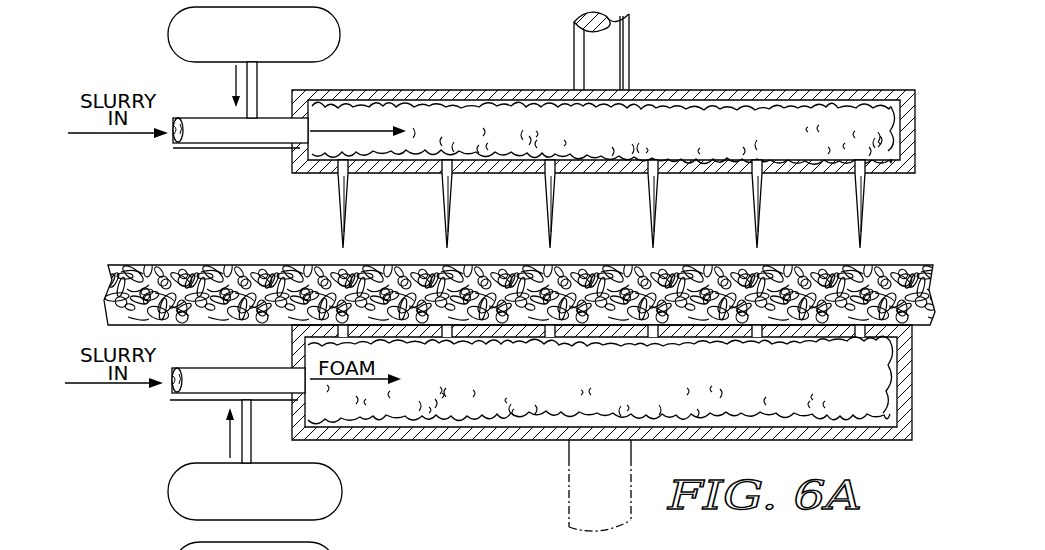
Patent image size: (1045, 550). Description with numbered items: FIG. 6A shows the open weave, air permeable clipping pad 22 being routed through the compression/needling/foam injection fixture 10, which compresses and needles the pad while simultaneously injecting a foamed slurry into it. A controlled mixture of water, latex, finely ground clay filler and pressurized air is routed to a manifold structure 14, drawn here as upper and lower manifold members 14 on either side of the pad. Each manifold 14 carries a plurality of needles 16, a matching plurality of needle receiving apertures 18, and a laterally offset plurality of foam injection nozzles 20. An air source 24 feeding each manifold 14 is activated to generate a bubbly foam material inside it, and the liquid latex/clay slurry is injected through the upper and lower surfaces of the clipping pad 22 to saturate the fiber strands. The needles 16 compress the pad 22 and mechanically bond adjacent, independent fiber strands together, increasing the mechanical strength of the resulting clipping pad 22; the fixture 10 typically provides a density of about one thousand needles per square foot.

The compression/needling/foam injection fixture 10 is at (403, 50).
The manifold structure 14 is at (482, 90).
The needles 16 is at (348, 222).
The needle receiving apertures 18 is at (357, 313).
The foam injection nozzles 20 is at (707, 163).
The clipping pad 22 is at (213, 265).
The air source 24 is at (171, 50).